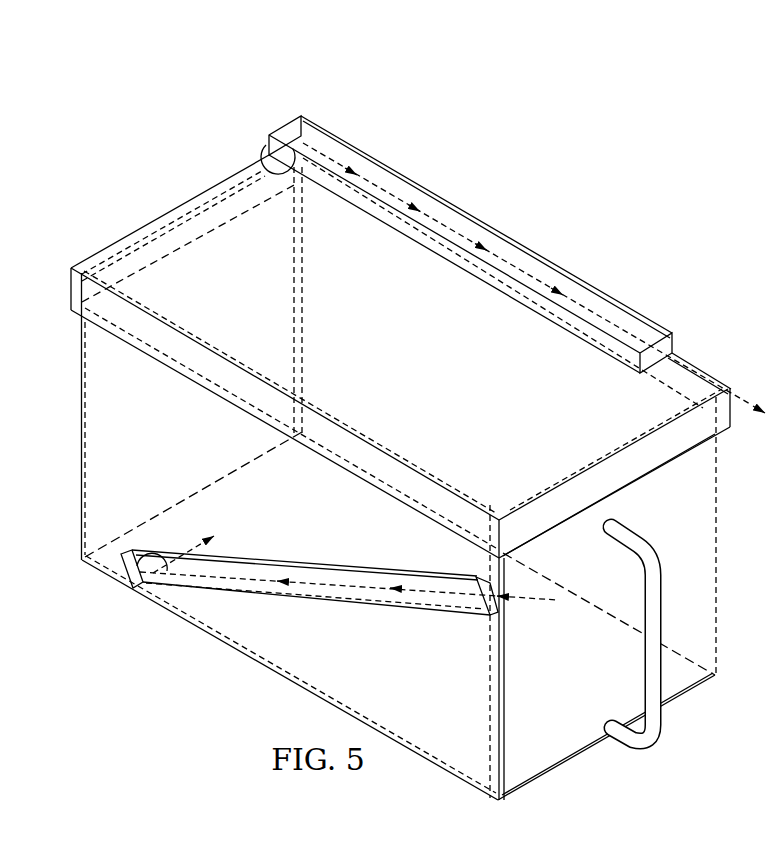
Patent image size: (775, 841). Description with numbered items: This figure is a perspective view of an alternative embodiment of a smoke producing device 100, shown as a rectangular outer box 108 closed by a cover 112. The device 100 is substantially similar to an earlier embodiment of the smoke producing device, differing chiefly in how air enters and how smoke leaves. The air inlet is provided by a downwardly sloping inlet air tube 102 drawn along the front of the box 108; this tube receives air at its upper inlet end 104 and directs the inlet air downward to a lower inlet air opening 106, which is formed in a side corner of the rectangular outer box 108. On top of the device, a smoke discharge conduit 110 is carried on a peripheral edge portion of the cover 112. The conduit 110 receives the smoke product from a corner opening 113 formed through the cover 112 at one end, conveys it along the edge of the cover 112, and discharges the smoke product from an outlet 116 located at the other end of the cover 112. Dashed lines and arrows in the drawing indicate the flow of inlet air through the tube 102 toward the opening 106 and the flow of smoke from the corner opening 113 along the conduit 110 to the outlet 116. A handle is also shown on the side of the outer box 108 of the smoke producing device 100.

The smoke producing device 100 is at (137, 81).
The inlet air tube 102 is at (360, 588).
The upper inlet end 104 is at (502, 579).
The lower inlet air opening 106 is at (133, 590).
The rectangular outer box 108 is at (552, 687).
The smoke discharge conduit 110 is at (540, 285).
The cover 112 is at (376, 307).
The corner opening 113 is at (266, 146).
The outlet 116 is at (674, 353).